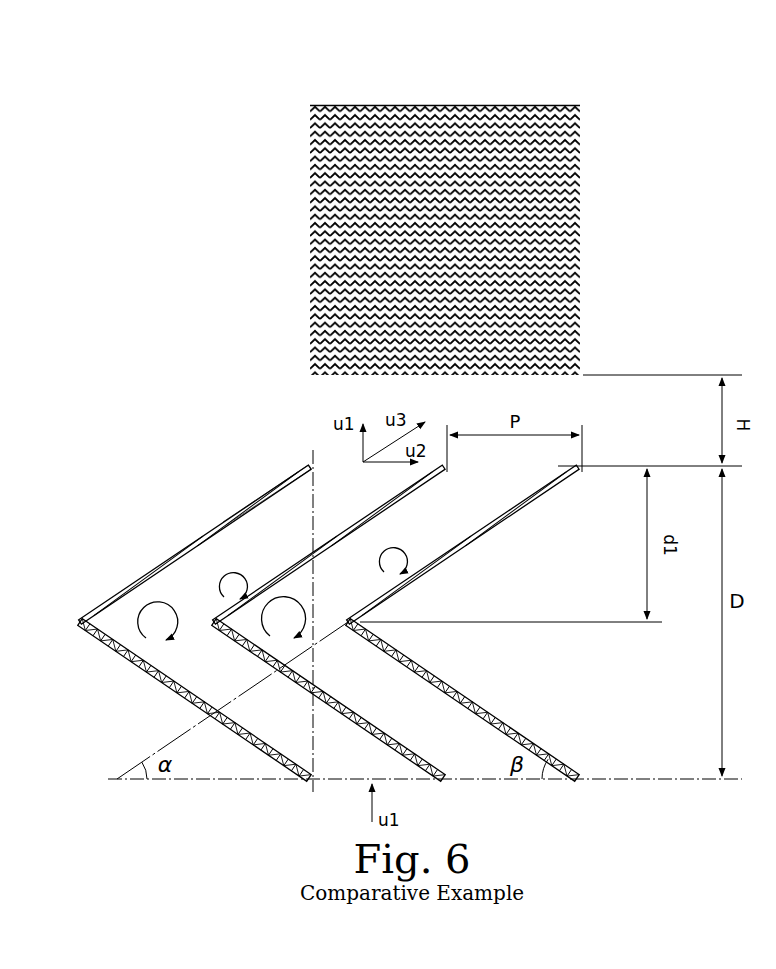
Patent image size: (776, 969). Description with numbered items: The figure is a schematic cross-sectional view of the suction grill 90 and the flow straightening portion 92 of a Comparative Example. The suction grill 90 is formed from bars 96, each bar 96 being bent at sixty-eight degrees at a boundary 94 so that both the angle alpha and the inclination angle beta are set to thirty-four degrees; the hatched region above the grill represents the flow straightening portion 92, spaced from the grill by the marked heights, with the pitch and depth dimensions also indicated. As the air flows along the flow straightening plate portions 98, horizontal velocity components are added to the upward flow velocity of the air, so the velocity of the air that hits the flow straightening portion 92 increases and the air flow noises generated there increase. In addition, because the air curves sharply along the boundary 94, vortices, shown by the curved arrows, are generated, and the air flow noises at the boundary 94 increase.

The suction grill 90 is at (312, 587).
The flow straightening portion 92 is at (446, 102).
The boundary 94 is at (82, 620).
The bar 96 is at (158, 561).
The flow straightening plate portion 98 is at (268, 490).